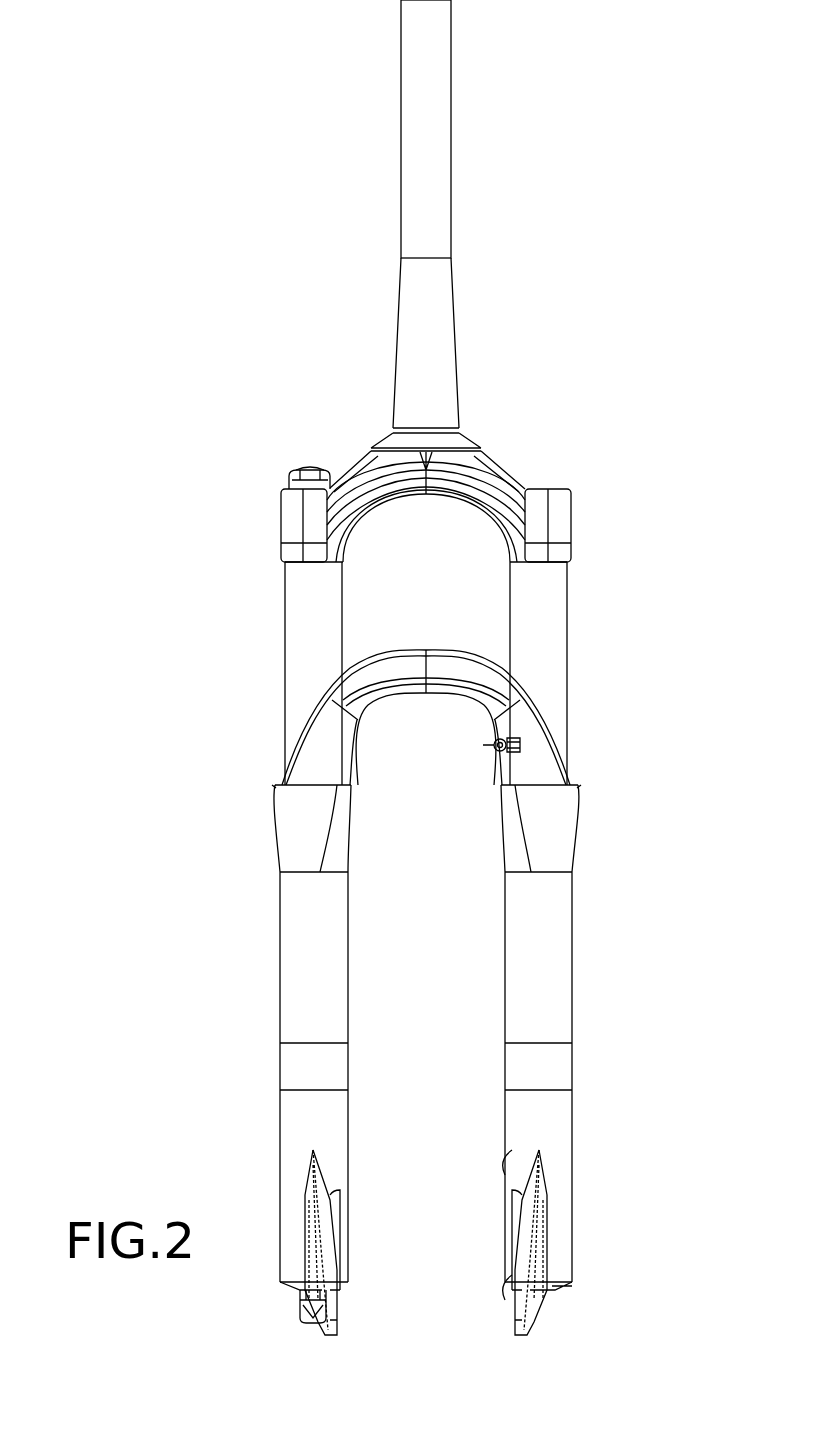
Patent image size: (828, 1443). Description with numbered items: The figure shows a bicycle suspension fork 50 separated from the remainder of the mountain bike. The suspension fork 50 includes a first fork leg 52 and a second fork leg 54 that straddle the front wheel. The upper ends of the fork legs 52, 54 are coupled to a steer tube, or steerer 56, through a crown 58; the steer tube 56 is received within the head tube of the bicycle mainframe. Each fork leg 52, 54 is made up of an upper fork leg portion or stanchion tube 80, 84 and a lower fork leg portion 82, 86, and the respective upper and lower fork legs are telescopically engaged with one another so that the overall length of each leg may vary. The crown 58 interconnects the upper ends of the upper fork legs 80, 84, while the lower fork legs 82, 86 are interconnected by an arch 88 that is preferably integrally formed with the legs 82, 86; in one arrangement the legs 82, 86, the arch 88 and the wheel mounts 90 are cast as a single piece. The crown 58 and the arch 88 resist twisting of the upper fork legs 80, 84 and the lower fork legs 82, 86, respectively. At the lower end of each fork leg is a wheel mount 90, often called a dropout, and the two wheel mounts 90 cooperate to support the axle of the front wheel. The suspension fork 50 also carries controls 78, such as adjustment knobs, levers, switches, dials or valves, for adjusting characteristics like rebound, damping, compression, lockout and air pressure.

The suspension fork 50 is at (590, 200).
The first fork leg 52 is at (258, 865).
The second fork leg 54 is at (600, 866).
The steer tube 56 is at (456, 79).
The crown 58 is at (503, 478).
The controls 78 is at (300, 470).
The upper fork leg 80 is at (285, 628).
The lower fork leg 82 is at (281, 960).
The upper fork leg 84 is at (568, 617).
The lower fork leg 86 is at (573, 1003).
The arch 88 is at (390, 655).
The wheel mount 90 is at (330, 1256).